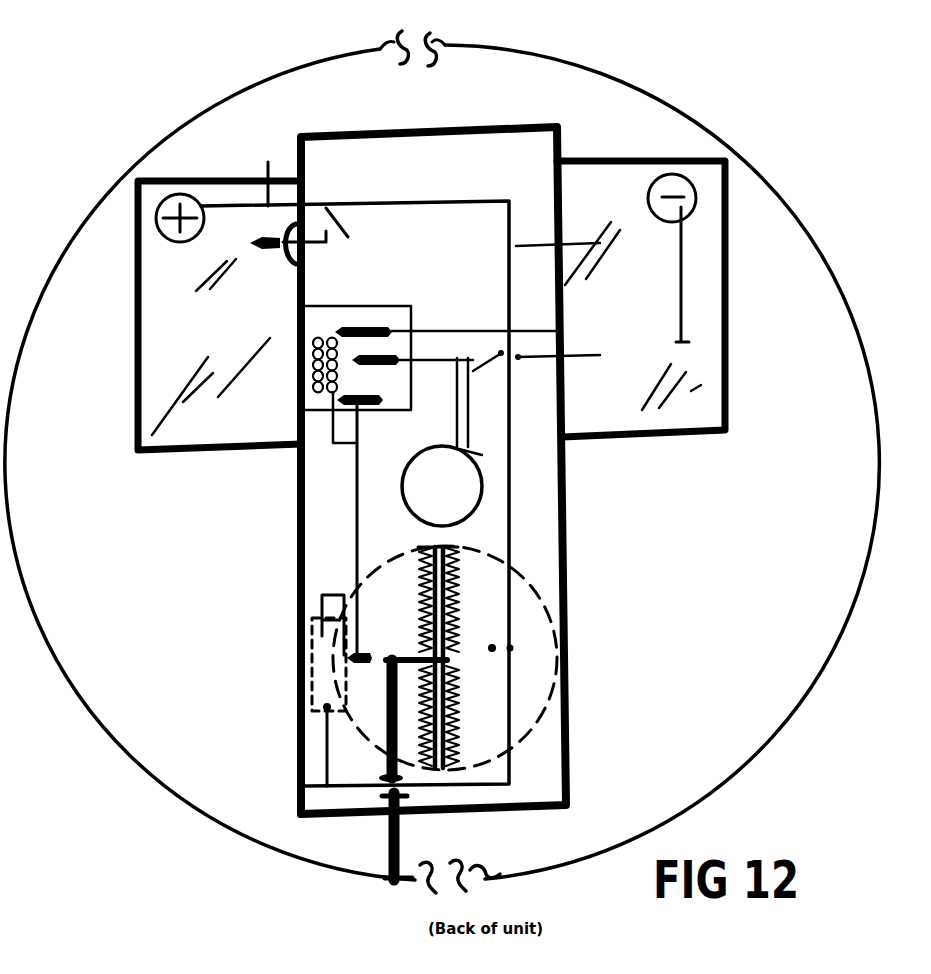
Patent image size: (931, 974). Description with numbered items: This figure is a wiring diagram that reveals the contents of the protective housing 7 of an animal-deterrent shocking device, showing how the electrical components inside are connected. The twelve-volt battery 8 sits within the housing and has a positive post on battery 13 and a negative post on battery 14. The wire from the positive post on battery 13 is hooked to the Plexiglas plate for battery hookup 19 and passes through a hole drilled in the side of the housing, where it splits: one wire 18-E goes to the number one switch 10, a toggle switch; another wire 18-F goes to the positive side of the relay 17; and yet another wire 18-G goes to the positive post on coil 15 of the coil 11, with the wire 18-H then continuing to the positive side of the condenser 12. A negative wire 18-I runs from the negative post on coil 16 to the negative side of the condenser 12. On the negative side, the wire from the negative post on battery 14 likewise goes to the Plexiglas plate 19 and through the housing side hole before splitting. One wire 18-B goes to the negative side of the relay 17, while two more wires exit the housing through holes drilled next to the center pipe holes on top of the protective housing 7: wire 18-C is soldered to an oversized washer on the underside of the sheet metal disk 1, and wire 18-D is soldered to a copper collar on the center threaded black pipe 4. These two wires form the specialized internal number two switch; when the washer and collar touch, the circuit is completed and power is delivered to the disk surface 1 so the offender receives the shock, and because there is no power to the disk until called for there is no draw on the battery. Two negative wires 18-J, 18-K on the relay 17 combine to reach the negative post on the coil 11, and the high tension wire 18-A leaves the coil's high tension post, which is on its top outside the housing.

The sheet metal disk 1 is at (671, 111).
The threaded black pipe 4 is at (460, 477).
The protective housing 7 is at (540, 520).
The 12-volt battery 8 is at (701, 306).
The #1 switch 10 is at (250, 242).
The coil 11 is at (524, 711).
The condenser 12 is at (324, 639).
The positive post on battery 13 is at (156, 218).
The negative post on battery 14 is at (692, 208).
The positive post on coil 15 is at (510, 648).
The negative post on coil 16 is at (352, 661).
The relay 17 is at (319, 324).
The Plexiglas plate for battery hookup 19 is at (792, 260).
The high tension wire 18-A is at (400, 840).
The negative battery to negative relay wire 18-B is at (600, 355).
The negative battery to oversized washer wire 18-C is at (468, 404).
The negative battery to copper collar wire 18-D is at (457, 423).
The positive battery to #1 switch wire 18-E is at (268, 172).
The positive battery to positive relay wire 18-F is at (560, 331).
The positive battery to positive coil wire 18-G is at (600, 243).
The positive coil to condenser wire 18-H is at (326, 775).
The negative coil to negative condenser wire 18-I is at (322, 597).
The negative relay to negative coil wire 18-J is at (337, 400).
The negative relay to negative coil wire 18-K is at (352, 493).